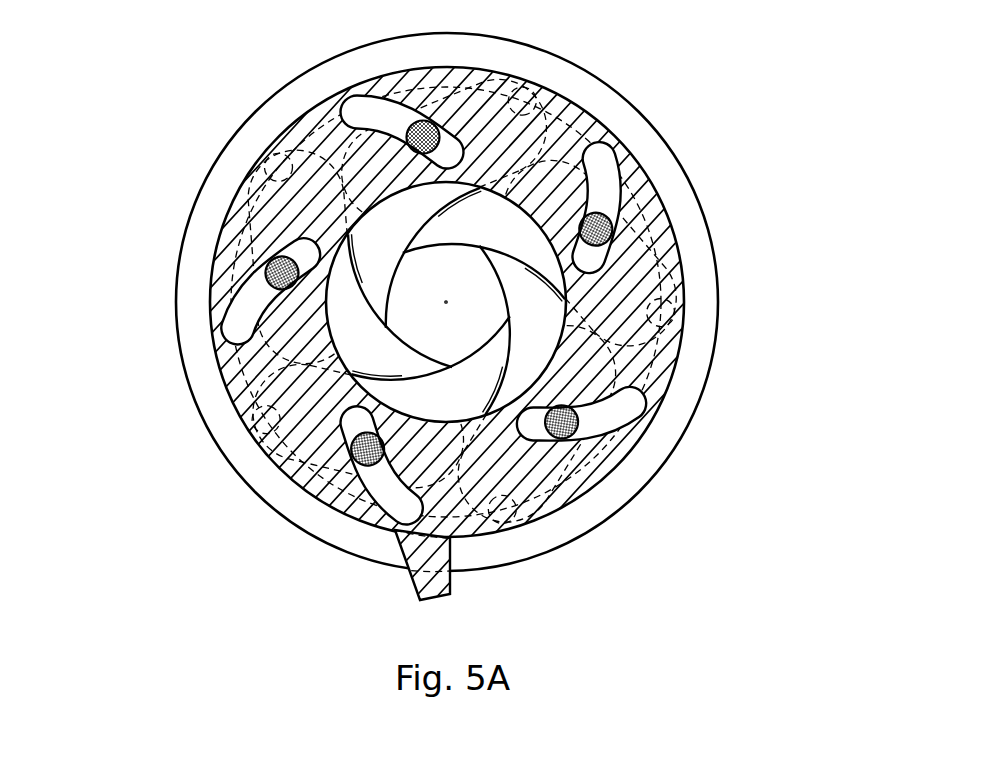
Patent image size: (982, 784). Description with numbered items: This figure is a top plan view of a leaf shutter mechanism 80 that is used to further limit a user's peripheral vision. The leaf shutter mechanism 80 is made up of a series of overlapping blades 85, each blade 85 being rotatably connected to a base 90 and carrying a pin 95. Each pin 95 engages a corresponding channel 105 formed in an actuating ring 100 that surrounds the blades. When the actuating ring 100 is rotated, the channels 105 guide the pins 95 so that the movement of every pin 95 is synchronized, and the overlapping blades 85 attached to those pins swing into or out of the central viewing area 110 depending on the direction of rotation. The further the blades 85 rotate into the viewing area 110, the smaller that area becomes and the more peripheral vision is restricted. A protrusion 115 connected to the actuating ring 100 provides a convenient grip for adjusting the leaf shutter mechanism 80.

The leaf shutter mechanism 80 is at (177, 262).
The overlapping blades 85 is at (533, 290).
The base 90 is at (212, 401).
The pin 95 is at (600, 222).
The actuating ring 100 is at (580, 125).
The channel 105 is at (618, 417).
The viewing area 110 is at (447, 302).
The protrusion 115 is at (433, 560).